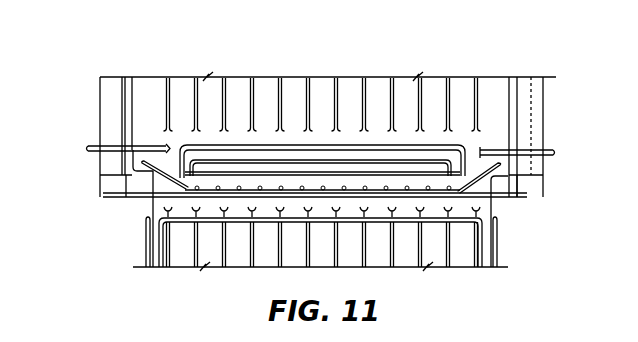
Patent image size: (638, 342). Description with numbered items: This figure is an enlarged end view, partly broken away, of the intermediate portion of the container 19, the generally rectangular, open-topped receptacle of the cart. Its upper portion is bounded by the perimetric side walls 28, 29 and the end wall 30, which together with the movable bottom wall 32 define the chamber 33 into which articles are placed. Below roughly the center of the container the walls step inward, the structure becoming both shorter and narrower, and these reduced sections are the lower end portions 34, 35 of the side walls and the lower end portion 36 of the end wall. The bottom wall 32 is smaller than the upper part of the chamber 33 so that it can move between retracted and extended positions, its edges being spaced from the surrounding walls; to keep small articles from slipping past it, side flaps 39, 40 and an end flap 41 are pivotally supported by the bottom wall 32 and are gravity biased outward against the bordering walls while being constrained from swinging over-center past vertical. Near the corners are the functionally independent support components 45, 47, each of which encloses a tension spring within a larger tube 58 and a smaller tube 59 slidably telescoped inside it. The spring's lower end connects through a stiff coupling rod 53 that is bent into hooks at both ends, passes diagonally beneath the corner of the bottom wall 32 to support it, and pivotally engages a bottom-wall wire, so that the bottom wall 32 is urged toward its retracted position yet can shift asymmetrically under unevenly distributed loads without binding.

The container 19 is at (233, 78).
The side wall 28 is at (556, 152).
The side wall 29 is at (88, 148).
The end wall 30 is at (312, 77).
The bottom wall 32 is at (237, 193).
The chamber 33 is at (375, 100).
The lower end portion of side wall 34 is at (498, 260).
The lower end portion of side wall 35 is at (146, 250).
The lower end portion of end wall 36 is at (481, 268).
The side flap 39 is at (500, 165).
The side flap 40 is at (160, 166).
The end flap 41 is at (432, 146).
The support component 45 is at (537, 80).
The support component 47 is at (109, 76).
The coupling rod 53 is at (133, 197).
The larger tube 58 is at (108, 84).
The smaller tube 59 is at (106, 183).